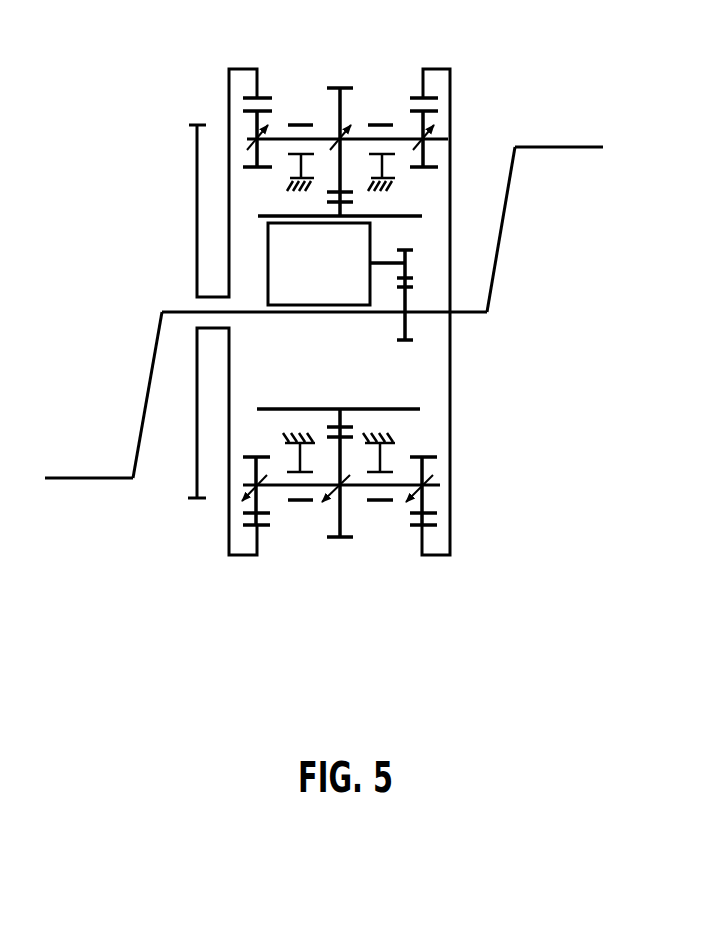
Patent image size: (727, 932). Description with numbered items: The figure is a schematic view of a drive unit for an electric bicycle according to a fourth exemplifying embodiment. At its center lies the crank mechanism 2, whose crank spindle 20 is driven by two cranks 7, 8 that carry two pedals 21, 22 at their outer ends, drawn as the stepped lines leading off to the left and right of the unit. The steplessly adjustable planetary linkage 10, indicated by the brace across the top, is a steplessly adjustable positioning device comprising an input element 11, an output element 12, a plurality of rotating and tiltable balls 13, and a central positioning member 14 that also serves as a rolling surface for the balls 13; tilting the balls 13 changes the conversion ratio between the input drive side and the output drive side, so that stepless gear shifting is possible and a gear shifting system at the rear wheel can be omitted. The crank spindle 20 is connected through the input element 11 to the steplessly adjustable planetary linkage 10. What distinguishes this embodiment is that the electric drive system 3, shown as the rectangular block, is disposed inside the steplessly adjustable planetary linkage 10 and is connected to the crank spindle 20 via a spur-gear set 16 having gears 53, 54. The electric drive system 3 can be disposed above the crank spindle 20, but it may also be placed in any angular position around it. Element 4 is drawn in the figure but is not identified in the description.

The steplessly adjustable planetary linkage 10 is at (458, 52).
The crank mechanism 2 is at (138, 322).
The electric drive system 3 is at (330, 295).
The brake 4 is at (196, 187).
The crank 7 is at (498, 257).
The crank 8 is at (145, 400).
The input element 11 is at (452, 85).
The output element 12 is at (230, 101).
The balls 13 is at (330, 130).
The central positioning member 14 is at (325, 407).
The spur-gear set 16 is at (427, 282).
The crank spindle 20 is at (250, 312).
The pedal 21 is at (545, 143).
The pedal 22 is at (73, 482).
The gear 53 is at (408, 260).
The gear 54 is at (407, 323).